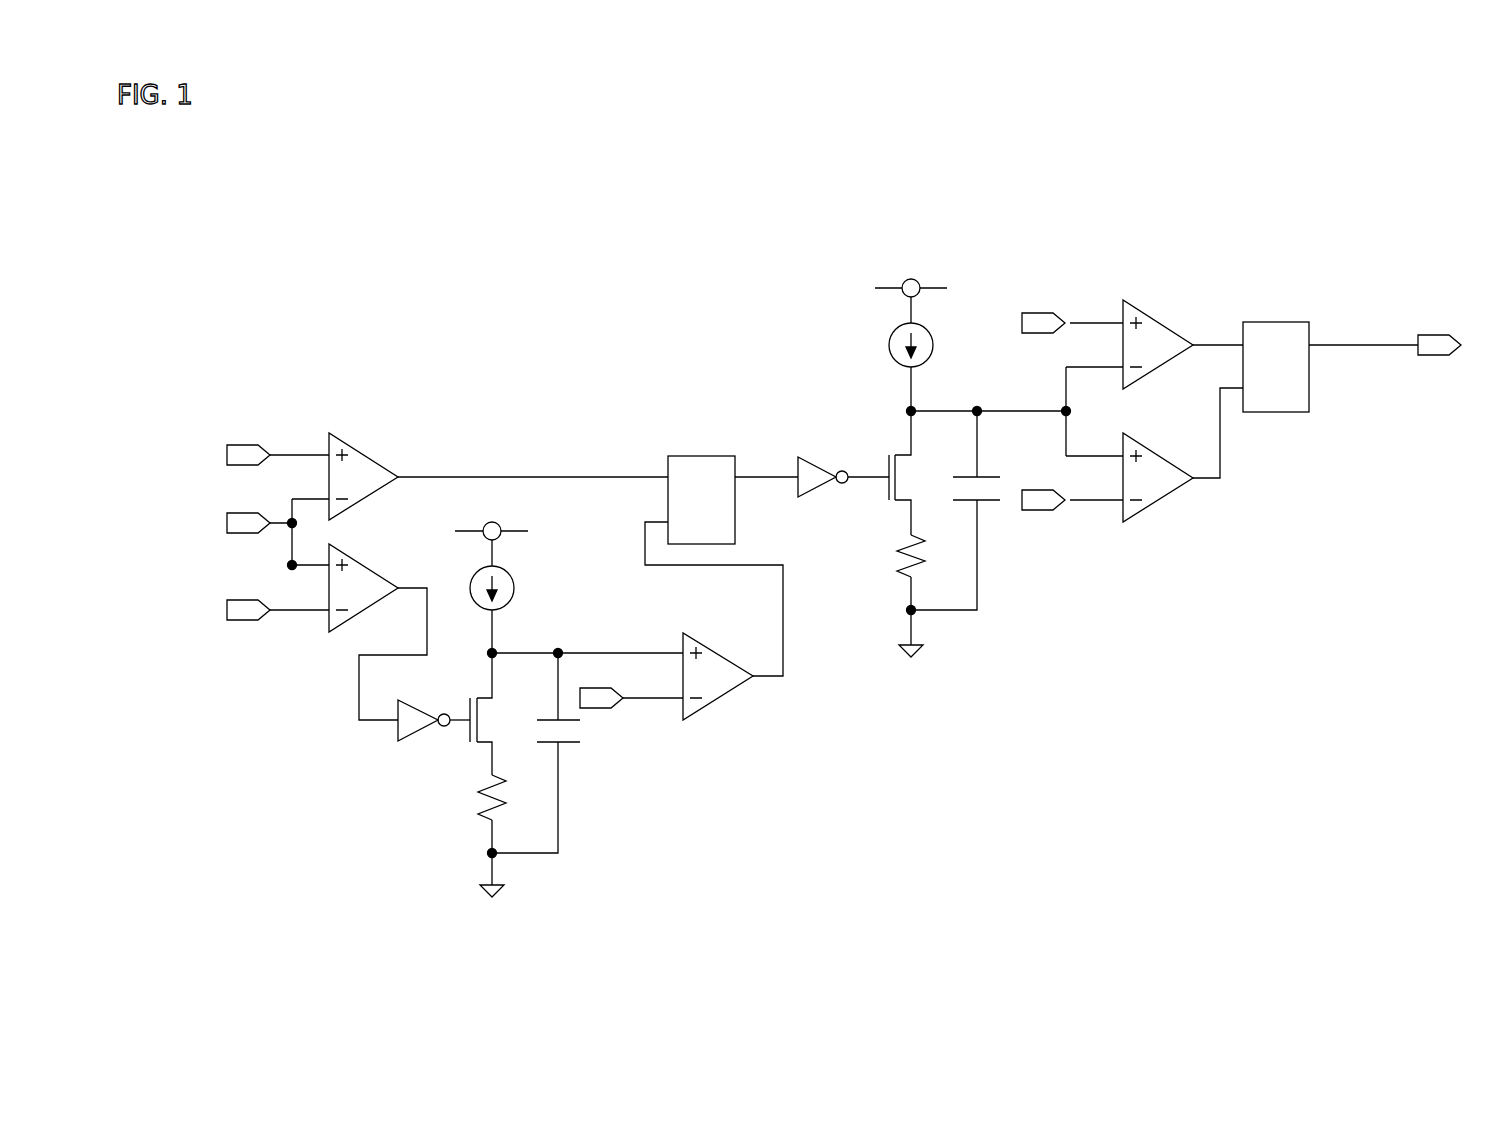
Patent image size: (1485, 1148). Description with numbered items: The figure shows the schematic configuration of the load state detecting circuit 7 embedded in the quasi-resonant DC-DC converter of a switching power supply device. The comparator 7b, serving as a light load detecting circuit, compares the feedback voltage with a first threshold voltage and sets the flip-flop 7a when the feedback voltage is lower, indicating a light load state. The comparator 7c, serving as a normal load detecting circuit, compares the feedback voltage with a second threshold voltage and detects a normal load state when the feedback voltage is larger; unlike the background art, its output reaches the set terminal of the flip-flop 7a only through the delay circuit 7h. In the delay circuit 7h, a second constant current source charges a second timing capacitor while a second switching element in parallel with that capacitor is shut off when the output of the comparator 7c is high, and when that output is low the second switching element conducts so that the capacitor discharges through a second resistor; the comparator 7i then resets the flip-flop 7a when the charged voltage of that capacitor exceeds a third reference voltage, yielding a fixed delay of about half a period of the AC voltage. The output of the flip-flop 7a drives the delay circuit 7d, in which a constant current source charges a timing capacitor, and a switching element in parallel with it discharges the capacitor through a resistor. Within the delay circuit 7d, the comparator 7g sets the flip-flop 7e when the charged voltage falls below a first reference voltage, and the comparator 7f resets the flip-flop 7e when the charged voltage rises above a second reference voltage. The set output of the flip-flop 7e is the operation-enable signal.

The load state detecting circuit 7 is at (707, 355).
The flip-flop 7a is at (693, 456).
The comparator (light load detecting circuit) 7b is at (368, 460).
The comparator (normal load detecting circuit) 7c is at (368, 570).
The delay circuit 7d is at (897, 435).
The flip-flop 7e is at (1278, 322).
The comparator 7f is at (1162, 500).
The comparator 7g is at (1150, 313).
The delay circuit 7h is at (634, 764).
The comparator 7i is at (725, 695).